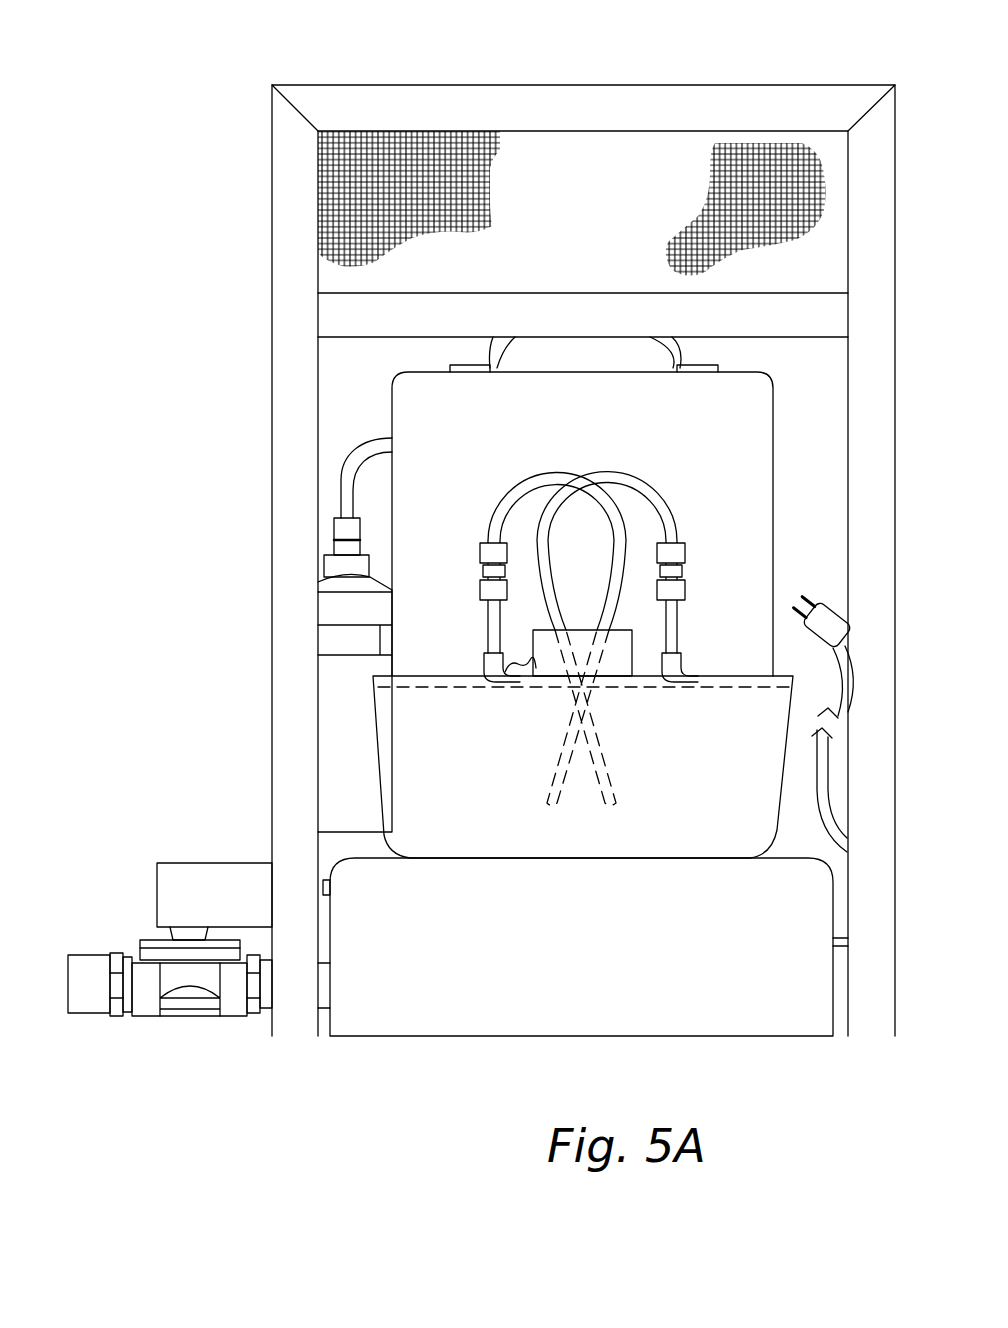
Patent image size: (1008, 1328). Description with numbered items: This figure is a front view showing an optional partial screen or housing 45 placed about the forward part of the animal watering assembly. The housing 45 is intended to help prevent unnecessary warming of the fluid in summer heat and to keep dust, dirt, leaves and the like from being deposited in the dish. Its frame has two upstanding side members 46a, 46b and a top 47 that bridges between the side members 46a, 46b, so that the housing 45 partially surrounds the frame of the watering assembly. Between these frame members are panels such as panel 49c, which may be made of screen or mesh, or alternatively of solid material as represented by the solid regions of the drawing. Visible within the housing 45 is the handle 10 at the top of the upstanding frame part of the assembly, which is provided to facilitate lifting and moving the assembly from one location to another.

The housing 45 is at (506, 64).
The top 47 is at (688, 103).
The panel 49c is at (600, 207).
The handle 10 is at (670, 352).
The upstanding side member 46a is at (290, 630).
The upstanding side member 46b is at (868, 513).